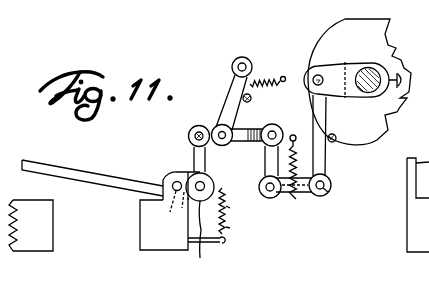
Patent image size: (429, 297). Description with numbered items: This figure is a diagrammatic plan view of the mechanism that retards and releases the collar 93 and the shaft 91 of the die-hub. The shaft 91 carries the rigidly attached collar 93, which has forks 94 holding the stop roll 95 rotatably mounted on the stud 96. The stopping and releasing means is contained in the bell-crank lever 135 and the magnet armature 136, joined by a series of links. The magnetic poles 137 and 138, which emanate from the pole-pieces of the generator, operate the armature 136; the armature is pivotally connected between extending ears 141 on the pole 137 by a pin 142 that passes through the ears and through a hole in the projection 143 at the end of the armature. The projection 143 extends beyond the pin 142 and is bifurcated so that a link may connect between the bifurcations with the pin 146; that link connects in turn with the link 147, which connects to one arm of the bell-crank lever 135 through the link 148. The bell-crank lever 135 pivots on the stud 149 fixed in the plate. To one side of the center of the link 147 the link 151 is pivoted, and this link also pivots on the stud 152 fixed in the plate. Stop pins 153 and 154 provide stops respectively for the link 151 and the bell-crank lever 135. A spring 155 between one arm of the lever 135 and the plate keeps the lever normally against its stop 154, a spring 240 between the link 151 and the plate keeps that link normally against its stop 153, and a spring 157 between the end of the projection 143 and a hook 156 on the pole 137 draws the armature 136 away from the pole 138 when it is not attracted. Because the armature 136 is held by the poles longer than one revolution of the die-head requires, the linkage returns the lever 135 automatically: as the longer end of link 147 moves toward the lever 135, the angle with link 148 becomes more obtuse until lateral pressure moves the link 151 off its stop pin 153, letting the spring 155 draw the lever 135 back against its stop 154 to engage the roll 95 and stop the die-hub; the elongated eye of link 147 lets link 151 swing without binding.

The shaft 91 is at (386, 71).
The collar 93 is at (350, 63).
The forks 94 is at (334, 97).
The stop roll 95 is at (313, 63).
The stud 96 is at (324, 46).
The bell-crank lever 135 is at (326, 160).
The magnet armature 136 is at (128, 181).
The magnetic pole 137 is at (166, 246).
The magnetic pole 138 is at (38, 243).
The extending ears 141 is at (173, 174).
The pin 142 is at (176, 192).
The projection 143 is at (202, 252).
The pin 146 is at (228, 208).
The link 147 is at (262, 126).
The link 148 is at (265, 165).
The stud 149 is at (331, 195).
The link 151 is at (233, 108).
The stud 152 is at (232, 67).
The stop pin 153 is at (252, 99).
The stop pin 154 is at (332, 185).
The spring 155 is at (295, 198).
The hook 156 is at (222, 244).
The spring 157 is at (228, 228).
The spring 240 is at (272, 84).